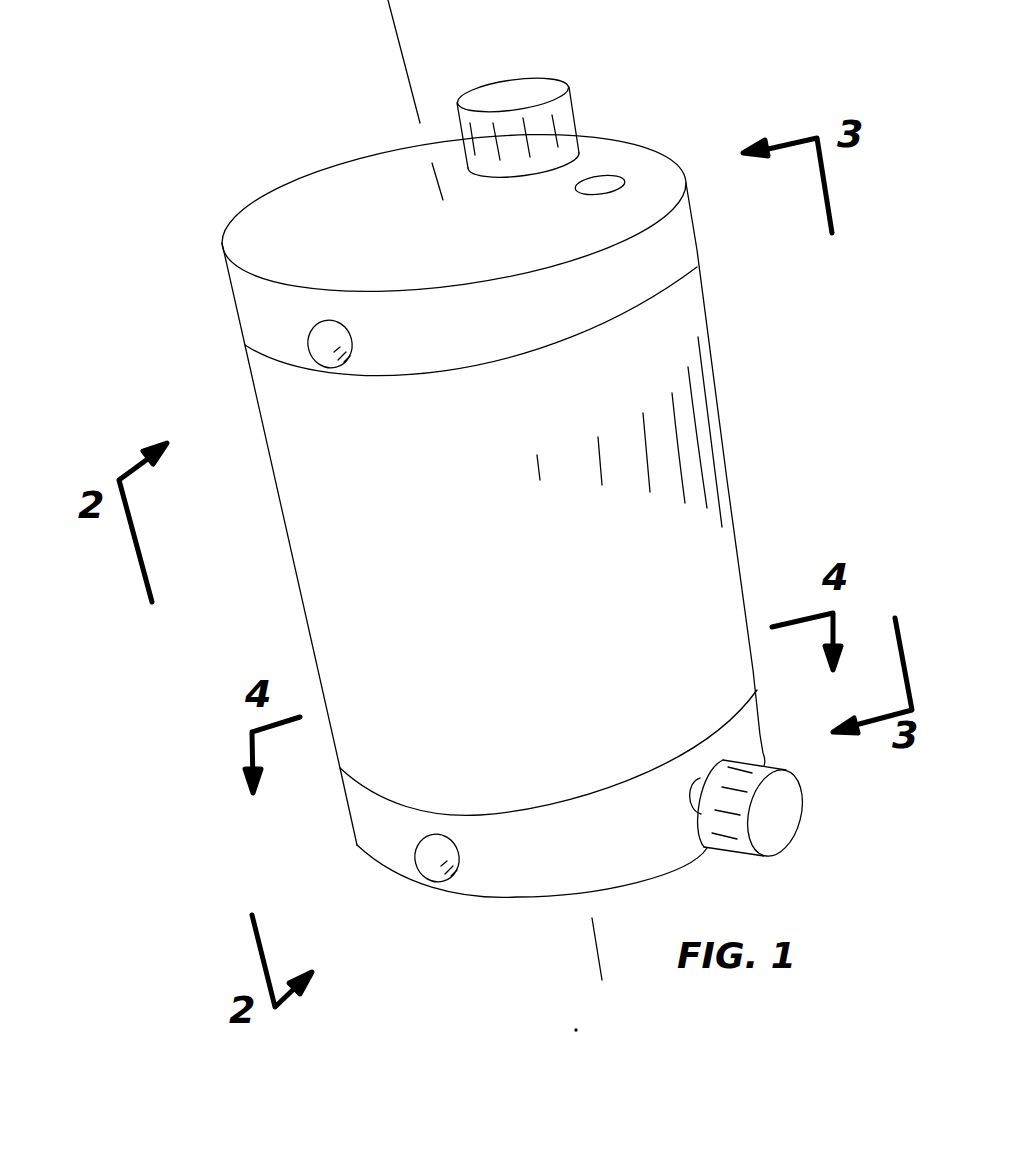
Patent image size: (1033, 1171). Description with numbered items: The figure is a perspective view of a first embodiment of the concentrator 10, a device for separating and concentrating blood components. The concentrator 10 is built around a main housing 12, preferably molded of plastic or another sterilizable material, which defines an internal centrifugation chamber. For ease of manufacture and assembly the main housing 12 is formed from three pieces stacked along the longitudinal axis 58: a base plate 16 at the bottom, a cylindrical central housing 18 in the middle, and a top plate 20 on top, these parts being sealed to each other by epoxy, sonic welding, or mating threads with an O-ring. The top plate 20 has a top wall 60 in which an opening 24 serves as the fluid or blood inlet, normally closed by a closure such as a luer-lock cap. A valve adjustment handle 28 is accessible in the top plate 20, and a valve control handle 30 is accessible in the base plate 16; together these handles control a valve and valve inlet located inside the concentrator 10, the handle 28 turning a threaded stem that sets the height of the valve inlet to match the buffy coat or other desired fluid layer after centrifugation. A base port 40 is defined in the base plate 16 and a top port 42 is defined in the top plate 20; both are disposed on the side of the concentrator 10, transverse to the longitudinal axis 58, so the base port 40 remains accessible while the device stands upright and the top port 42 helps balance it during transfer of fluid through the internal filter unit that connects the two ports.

The concentrator 10 is at (188, 188).
The main housing 12 is at (713, 340).
The base plate 16 is at (630, 850).
The central housing 18 is at (707, 590).
The top plate 20 is at (245, 299).
The opening 24 is at (603, 187).
The valve adjustment handle 28 is at (502, 97).
The valve control handle 30 is at (780, 815).
The base port 40 is at (430, 858).
The top port 42 is at (322, 344).
The longitudinal axis 58 is at (430, 65).
The top wall 60 is at (340, 195).